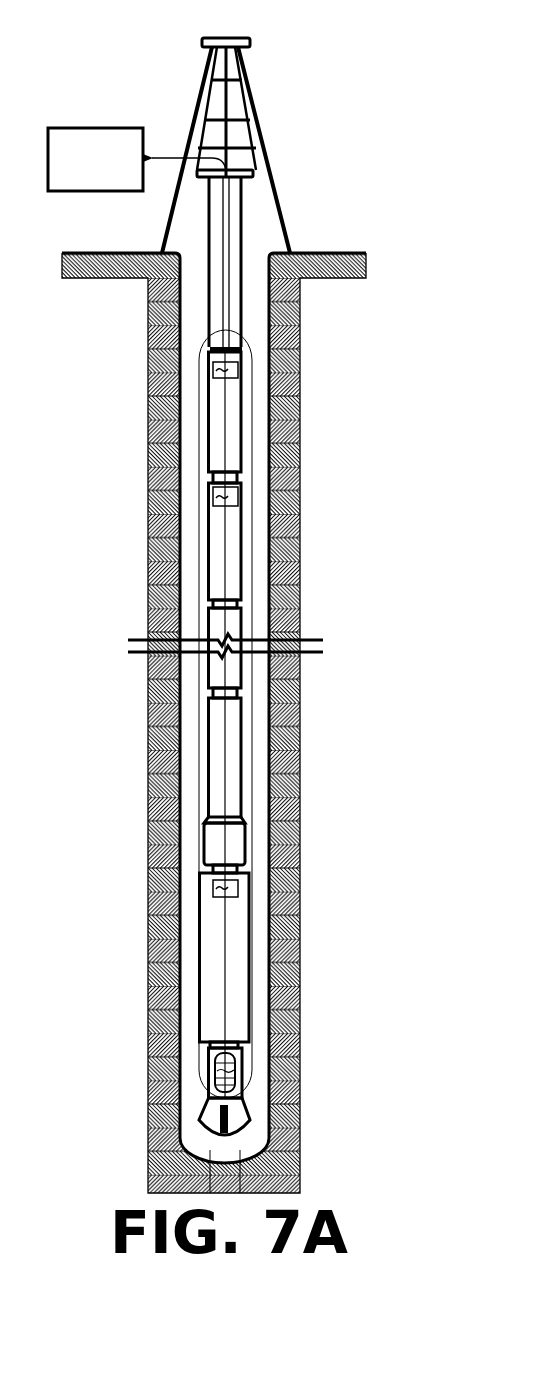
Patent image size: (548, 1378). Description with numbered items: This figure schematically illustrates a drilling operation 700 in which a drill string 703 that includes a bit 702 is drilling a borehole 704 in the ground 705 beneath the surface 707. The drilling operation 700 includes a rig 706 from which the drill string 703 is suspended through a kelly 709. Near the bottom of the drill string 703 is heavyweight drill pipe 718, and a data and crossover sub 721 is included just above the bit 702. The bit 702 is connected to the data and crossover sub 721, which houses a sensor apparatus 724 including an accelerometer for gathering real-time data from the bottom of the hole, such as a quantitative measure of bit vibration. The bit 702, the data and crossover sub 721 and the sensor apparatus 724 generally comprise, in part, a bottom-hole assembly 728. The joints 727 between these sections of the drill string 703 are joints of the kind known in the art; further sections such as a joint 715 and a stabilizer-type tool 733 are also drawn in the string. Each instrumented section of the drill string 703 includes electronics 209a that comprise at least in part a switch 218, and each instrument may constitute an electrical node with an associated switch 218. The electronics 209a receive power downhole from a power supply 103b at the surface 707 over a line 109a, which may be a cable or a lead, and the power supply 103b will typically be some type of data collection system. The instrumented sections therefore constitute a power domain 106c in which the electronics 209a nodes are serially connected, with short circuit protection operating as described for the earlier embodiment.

The drilling operation 700 is at (106, 40).
The rig 706 is at (198, 92).
The power supply 103b is at (93, 127).
The line 109a is at (167, 157).
The surface 707 is at (120, 251).
The kelly 709 is at (209, 308).
The drill string 703 is at (194, 329).
The ground 705 is at (75, 357).
The borehole 704 is at (190, 418).
The power domain 106c is at (198, 450).
The electronics 209a is at (207, 488).
The switch 218 is at (207, 498).
The joint 715 is at (208, 590).
The stabilizer 733 is at (200, 833).
The joints 727 is at (207, 868).
The heavyweight drill pipe 718 is at (213, 942).
The data and crossover sub 721 is at (198, 1053).
The sensor apparatus 724 is at (200, 1075).
The bit 702 is at (203, 1123).
The bottom-hole assembly 728 is at (198, 1137).